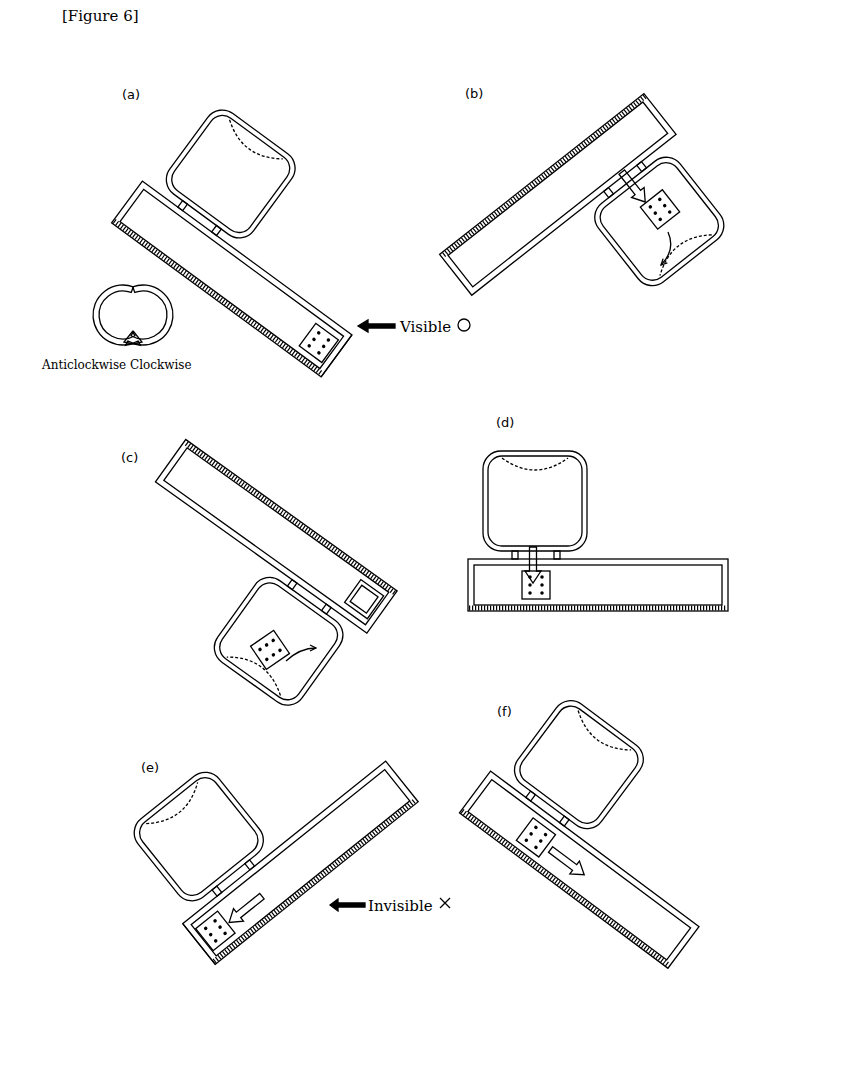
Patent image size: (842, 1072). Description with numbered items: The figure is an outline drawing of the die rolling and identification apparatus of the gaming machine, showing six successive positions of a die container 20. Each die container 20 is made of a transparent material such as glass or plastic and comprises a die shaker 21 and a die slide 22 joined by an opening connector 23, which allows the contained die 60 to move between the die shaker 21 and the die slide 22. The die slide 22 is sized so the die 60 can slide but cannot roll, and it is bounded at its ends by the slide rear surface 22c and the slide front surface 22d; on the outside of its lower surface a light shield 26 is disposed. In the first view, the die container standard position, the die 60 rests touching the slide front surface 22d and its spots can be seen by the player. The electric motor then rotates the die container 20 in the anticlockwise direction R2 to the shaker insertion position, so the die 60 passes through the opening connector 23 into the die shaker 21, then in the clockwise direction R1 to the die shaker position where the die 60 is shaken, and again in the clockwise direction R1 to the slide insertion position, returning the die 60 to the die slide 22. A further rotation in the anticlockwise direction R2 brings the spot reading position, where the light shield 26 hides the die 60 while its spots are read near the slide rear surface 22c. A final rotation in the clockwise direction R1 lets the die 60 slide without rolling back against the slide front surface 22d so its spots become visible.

The die container 20 is at (311, 206).
The die shaker 21 is at (253, 136).
The die slide 22 is at (422, 540).
The slide rear surface 22c is at (199, 949).
The slide front surface 22d is at (345, 352).
The opening connector 23 is at (167, 193).
The light shield 26 is at (264, 340).
The die 60 is at (332, 318).
The clockwise direction R1 is at (164, 327).
The anticlockwise direction R2 is at (122, 283).